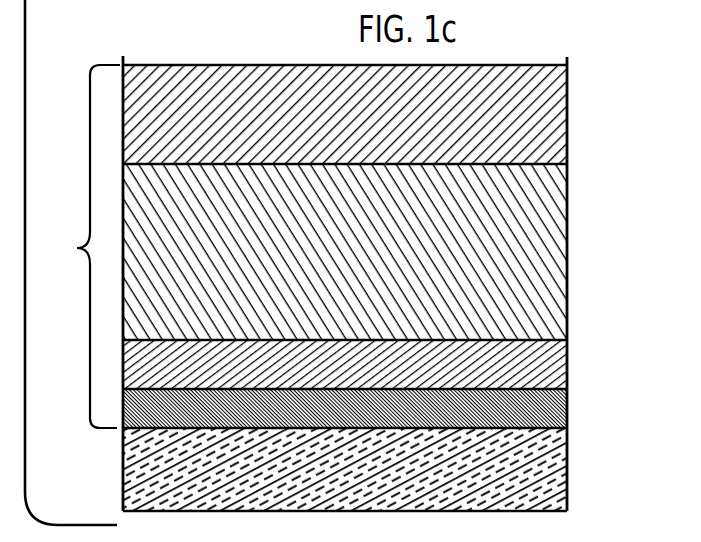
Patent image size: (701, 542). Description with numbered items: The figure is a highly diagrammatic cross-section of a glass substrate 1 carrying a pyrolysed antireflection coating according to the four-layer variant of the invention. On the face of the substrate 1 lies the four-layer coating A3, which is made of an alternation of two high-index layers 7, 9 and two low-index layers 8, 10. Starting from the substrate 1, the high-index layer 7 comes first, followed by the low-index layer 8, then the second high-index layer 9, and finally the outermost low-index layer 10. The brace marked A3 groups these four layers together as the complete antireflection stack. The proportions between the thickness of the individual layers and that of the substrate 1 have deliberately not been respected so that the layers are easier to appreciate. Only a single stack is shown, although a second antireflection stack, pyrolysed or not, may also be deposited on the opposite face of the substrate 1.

The glass substrate 1 is at (553, 460).
The high-index layer 7 is at (553, 412).
The low-index layer 8 is at (550, 357).
The high-index layer 9 is at (550, 250).
The low-index layer 10 is at (548, 122).
The four-layer coating A3 is at (79, 246).